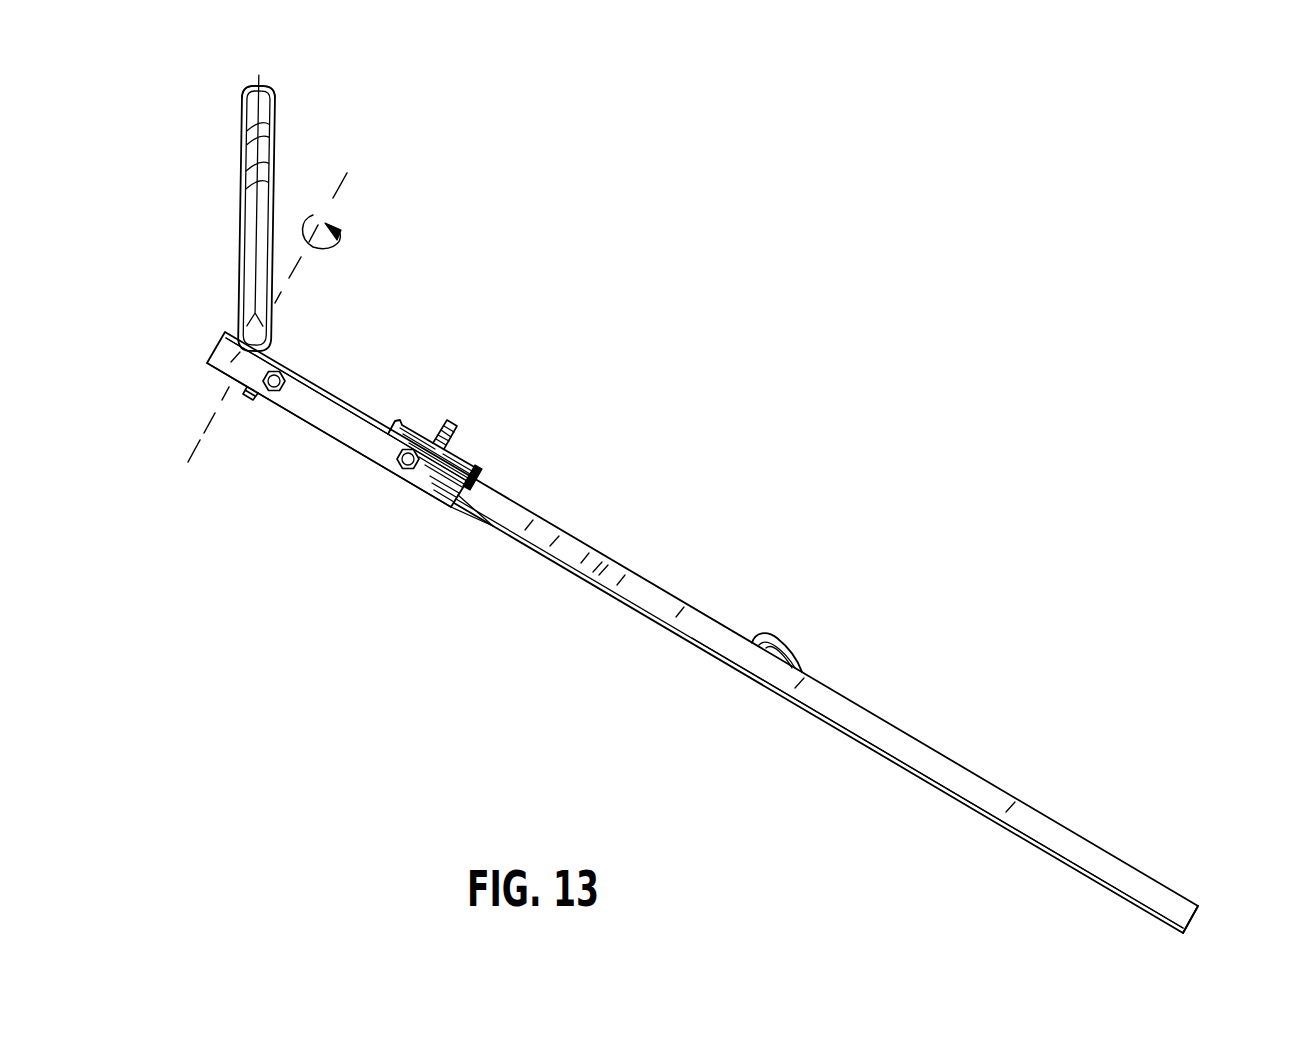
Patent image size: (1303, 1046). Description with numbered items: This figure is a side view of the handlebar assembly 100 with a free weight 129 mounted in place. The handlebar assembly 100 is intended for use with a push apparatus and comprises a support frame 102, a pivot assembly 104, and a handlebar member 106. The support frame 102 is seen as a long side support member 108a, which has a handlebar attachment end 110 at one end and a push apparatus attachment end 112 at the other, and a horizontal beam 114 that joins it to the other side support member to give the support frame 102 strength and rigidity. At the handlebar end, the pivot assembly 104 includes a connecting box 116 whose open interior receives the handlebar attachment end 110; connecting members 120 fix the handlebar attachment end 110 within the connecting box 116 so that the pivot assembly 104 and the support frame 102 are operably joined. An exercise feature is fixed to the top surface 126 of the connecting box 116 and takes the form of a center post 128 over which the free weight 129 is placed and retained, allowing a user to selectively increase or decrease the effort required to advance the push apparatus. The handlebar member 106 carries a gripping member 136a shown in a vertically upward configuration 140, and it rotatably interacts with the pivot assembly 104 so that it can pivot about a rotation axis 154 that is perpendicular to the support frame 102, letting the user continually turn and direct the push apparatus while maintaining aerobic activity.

The handlebar assembly 100 is at (845, 413).
The support frame 102 is at (758, 668).
The pivot assembly 104 is at (357, 452).
The handlebar member 106 is at (313, 207).
The side support member 108a is at (910, 752).
The handlebar attachment end 110 is at (483, 511).
The push apparatus attachment end 112 is at (1196, 915).
The horizontal beam 114 is at (792, 640).
The connecting box 116 is at (330, 421).
The connecting members 120 is at (278, 395).
The top surface 126 is at (333, 388).
The center post 128 is at (452, 420).
The free weight 129 is at (468, 456).
The gripping member 136a is at (275, 172).
The vertically upward configuration 140 is at (259, 87).
The rotation axis 154 is at (297, 272).